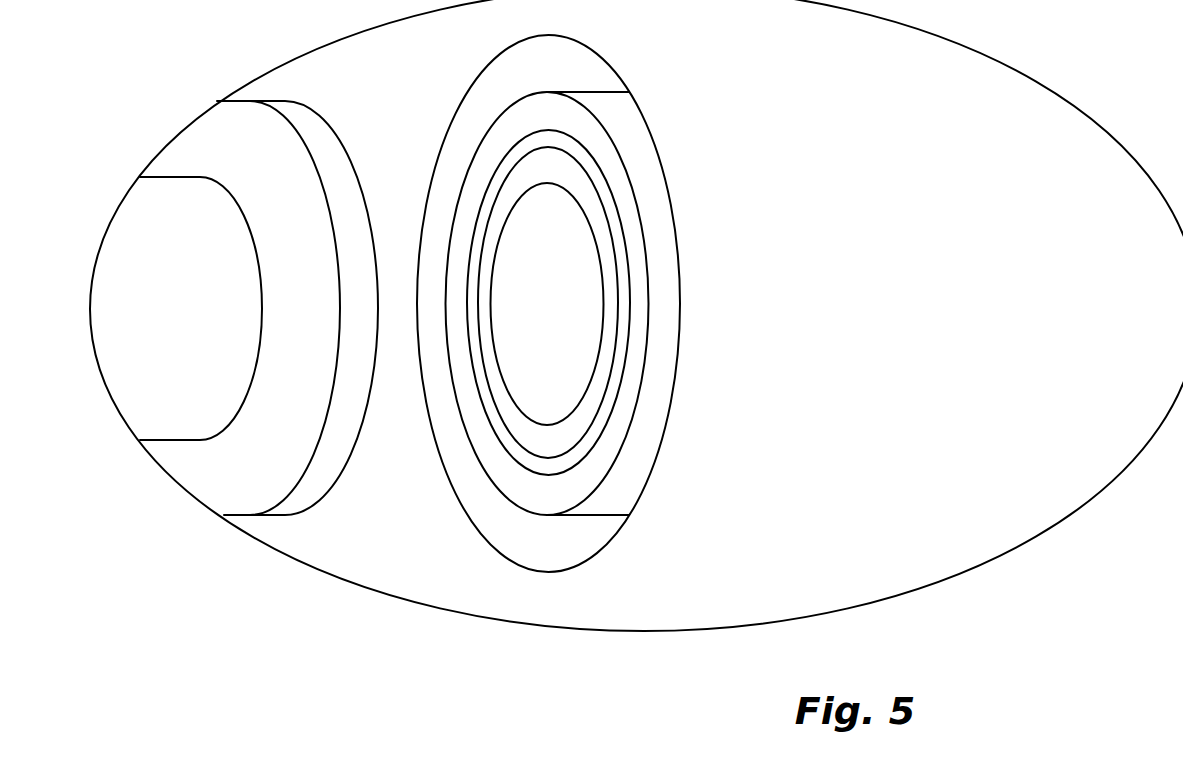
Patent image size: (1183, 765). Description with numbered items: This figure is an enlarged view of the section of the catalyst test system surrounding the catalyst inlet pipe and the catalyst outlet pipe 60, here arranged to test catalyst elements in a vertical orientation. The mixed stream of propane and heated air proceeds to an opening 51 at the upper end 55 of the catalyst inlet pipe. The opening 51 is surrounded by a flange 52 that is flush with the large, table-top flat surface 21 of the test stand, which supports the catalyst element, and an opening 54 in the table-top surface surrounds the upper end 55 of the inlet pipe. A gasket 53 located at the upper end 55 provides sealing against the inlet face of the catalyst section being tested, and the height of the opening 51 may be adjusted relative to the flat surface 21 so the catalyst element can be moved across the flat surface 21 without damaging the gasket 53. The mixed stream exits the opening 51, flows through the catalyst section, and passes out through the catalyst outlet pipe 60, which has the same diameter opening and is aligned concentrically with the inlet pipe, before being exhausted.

The flat surface 21 is at (914, 311).
The opening 51 is at (548, 298).
The flange 52 is at (540, 108).
The gasket 53 is at (543, 465).
The opening in the table-top surface 54 is at (542, 548).
The upper end 55 is at (588, 515).
The catalyst outlet pipe 60 is at (273, 185).